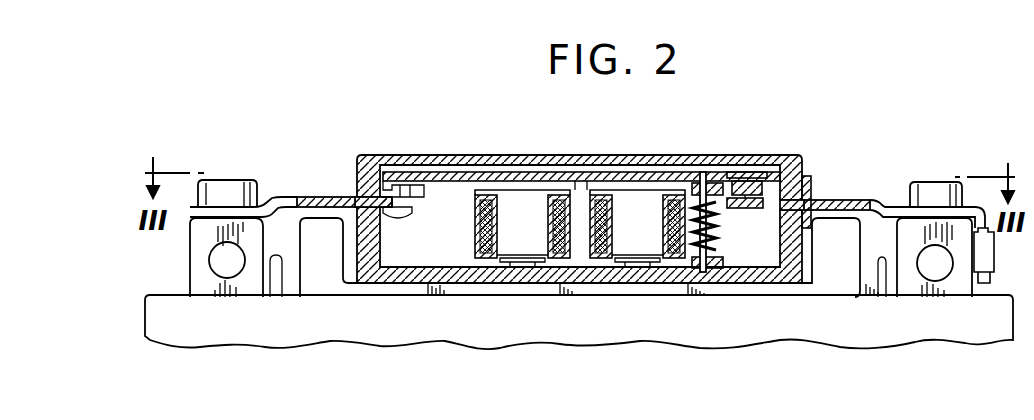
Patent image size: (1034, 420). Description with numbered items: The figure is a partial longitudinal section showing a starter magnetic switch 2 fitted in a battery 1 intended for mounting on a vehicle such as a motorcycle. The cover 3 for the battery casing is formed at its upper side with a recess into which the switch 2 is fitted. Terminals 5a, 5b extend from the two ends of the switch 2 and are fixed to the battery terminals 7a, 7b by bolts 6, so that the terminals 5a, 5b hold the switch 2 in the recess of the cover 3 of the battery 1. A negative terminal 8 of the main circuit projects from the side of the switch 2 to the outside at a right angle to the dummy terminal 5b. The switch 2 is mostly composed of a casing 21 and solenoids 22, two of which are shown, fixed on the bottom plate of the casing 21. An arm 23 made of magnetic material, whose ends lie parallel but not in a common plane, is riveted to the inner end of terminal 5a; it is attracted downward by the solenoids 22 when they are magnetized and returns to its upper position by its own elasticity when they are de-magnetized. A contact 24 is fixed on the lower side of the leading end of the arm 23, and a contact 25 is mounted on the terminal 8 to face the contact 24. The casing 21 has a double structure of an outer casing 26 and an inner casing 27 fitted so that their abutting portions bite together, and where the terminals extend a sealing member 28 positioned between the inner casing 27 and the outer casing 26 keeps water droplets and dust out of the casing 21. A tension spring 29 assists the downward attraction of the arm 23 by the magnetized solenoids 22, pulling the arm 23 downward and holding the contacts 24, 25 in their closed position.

The battery 1 is at (579, 342).
The starter magnetic switch 2 is at (603, 208).
The cover 3 is at (763, 298).
The terminal 5a is at (280, 196).
The terminal 5b is at (885, 200).
The bolt 6 is at (230, 186).
The battery terminal 7a is at (227, 288).
The battery terminal 7b is at (926, 288).
The negative terminal 8 is at (747, 208).
The casing 21 is at (579, 133).
The solenoid 22 is at (508, 262).
The arm 23 is at (727, 195).
The contact 24 is at (767, 182).
The contact 25 is at (762, 194).
The outer casing 26 is at (590, 158).
The inner casing 27 is at (580, 121).
The sealing member 28 is at (356, 182).
The tension spring 29 is at (716, 238).